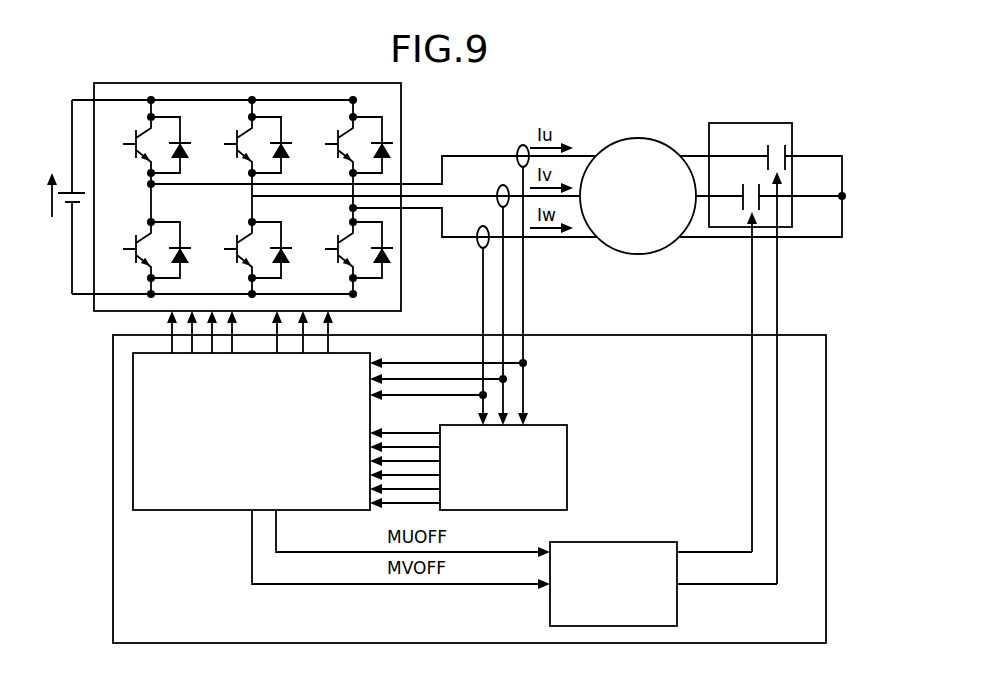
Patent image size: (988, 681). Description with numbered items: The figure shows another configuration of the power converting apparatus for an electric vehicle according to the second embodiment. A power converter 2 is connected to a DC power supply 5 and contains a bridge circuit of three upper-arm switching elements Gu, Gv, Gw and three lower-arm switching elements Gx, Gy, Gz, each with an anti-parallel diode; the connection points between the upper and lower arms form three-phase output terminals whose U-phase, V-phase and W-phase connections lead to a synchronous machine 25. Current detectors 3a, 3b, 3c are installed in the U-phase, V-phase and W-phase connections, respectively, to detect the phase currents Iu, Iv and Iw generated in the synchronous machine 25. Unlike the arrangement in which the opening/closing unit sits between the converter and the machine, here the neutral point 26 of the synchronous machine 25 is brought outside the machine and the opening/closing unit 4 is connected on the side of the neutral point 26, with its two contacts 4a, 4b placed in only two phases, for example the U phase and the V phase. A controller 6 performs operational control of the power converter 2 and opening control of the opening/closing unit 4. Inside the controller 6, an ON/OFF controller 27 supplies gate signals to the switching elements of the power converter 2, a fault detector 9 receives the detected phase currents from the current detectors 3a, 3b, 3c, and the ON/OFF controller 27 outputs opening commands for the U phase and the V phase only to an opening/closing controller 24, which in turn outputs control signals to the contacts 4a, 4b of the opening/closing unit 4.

The power converter 2 is at (402, 105).
The DC power supply 5 is at (70, 187).
The current detector 3a is at (519, 148).
The current detector 3b is at (499, 188).
The current detector 3c is at (483, 226).
The synchronous machine 25 is at (653, 141).
The opening/closing unit 4 is at (779, 123).
The opening/closing unit contact 4a is at (768, 149).
The opening/closing unit contact 4b is at (744, 184).
The neutral point 26 is at (841, 195).
The controller 6 is at (803, 336).
The ON/OFF controller 27 is at (162, 512).
The fault detector 9 is at (540, 425).
The opening/closing controller 24 is at (653, 542).